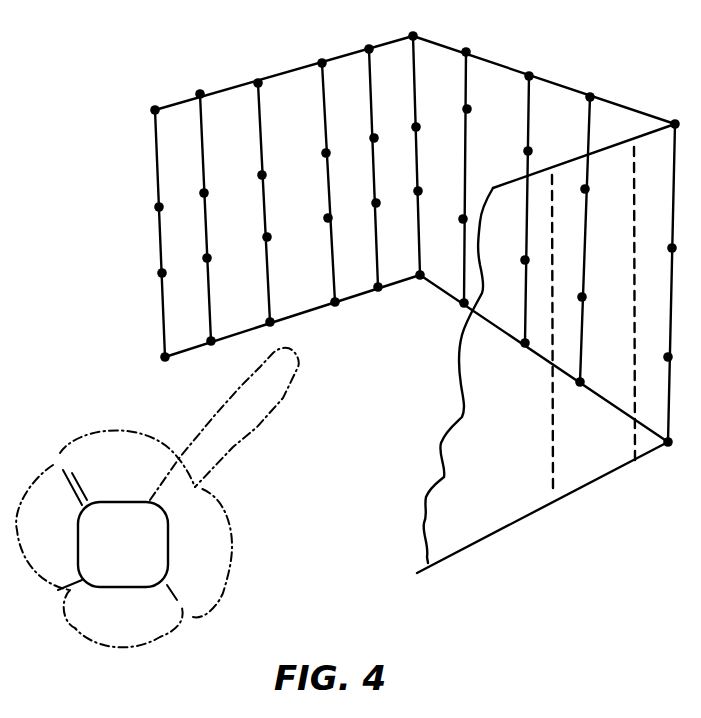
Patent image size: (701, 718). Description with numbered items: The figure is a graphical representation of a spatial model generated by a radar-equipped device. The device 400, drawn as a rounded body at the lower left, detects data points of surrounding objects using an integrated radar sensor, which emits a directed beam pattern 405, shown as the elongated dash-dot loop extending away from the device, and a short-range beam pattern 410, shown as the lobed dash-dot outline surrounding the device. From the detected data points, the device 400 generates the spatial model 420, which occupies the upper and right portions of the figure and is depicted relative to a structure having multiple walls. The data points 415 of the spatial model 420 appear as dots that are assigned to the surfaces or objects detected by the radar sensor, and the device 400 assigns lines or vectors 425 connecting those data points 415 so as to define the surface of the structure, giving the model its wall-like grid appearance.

The device 400 is at (123, 544).
The directed beam pattern 405 is at (243, 440).
The short-range beam pattern 410 is at (230, 560).
The data points 415 is at (157, 207).
The spatial model 420 is at (165, 73).
The lines or vectors connecting data points 425 is at (154, 155).